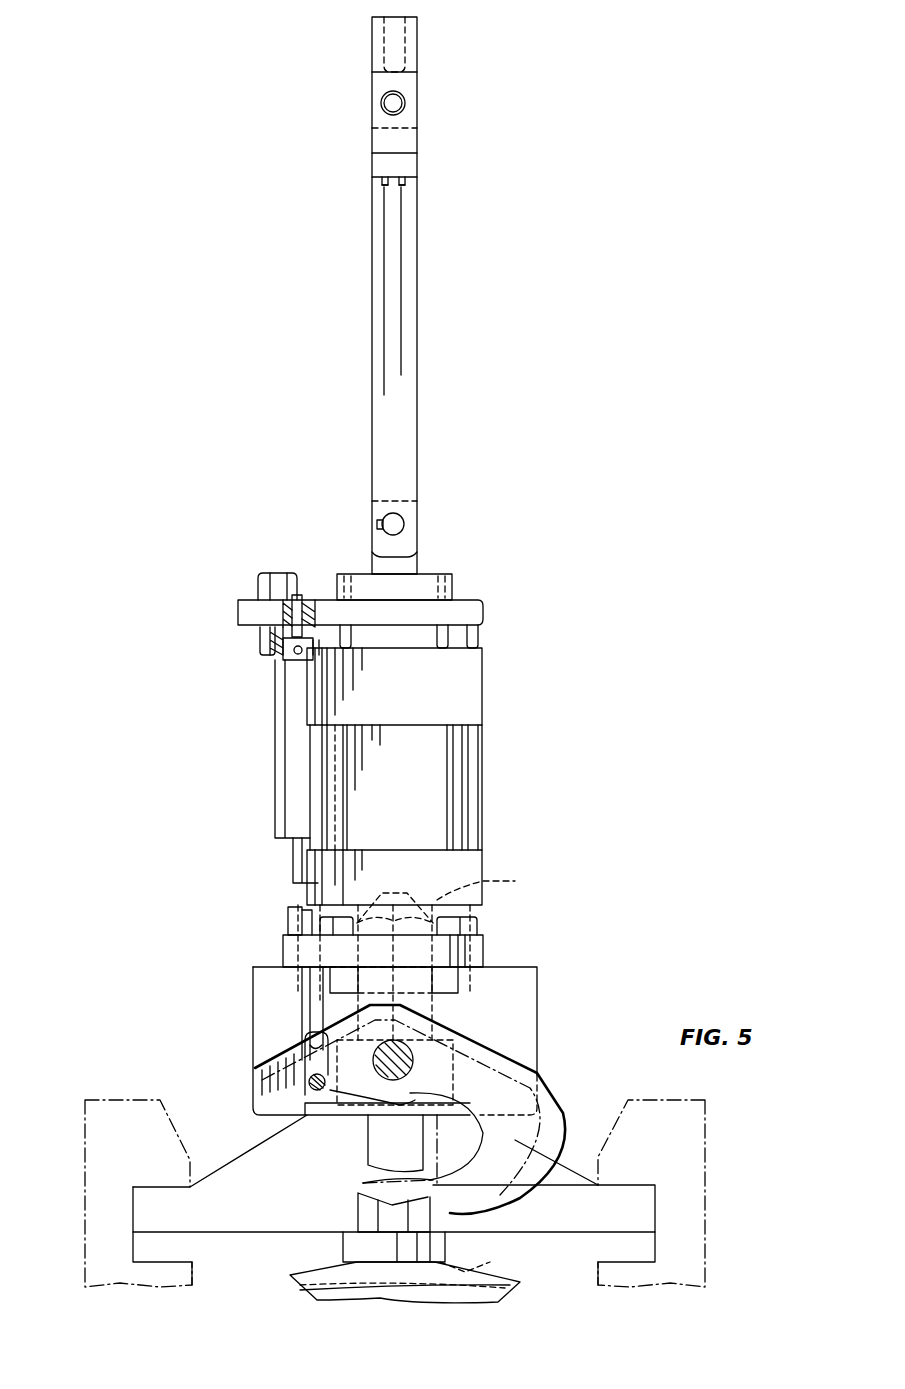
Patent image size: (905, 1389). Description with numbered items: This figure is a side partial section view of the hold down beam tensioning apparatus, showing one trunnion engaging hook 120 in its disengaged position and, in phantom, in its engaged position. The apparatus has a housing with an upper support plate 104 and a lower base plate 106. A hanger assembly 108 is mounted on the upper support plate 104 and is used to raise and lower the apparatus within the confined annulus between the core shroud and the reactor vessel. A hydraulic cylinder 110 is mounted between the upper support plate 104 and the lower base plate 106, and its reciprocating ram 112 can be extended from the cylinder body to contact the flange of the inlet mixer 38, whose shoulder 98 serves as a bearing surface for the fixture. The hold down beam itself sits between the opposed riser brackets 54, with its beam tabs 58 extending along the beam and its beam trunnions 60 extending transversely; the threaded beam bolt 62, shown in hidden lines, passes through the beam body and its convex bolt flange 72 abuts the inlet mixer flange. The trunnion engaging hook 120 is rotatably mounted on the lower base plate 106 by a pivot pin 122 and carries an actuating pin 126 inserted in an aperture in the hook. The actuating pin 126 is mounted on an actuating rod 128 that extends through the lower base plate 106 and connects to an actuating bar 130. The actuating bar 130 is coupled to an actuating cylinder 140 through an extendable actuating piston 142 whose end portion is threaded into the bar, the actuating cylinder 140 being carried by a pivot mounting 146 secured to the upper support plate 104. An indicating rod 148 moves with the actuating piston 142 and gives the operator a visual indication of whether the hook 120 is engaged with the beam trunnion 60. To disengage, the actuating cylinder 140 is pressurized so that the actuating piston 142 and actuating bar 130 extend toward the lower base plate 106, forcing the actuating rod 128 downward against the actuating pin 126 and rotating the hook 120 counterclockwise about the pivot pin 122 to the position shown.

The hanger assembly 108 is at (418, 101).
The upper support plate 104 is at (488, 618).
The indicating rod 148 is at (298, 608).
The pivot mounting 146 is at (290, 662).
The actuating cylinder 140 is at (293, 757).
The actuating piston 142 is at (300, 863).
The hydraulic cylinder 110 is at (420, 784).
The beam bolt 62 is at (420, 956).
The actuating bar 130 is at (290, 918).
The lower base plate 106 is at (478, 950).
The actuating rod 128 is at (305, 987).
The pivot pin 122 is at (413, 1058).
The trunnion engaging hook 120 is at (548, 1084).
The actuating pin 126 is at (312, 1090).
The riser bracket 54 is at (85, 1160).
The beam tab 58 is at (167, 1208).
The beam trunnion 60 is at (378, 1141).
The reciprocating ram 112 is at (355, 1217).
The inlet mixer 38 is at (317, 1282).
The bolt flange 72 is at (458, 1265).
The shoulder 98 is at (513, 1280).